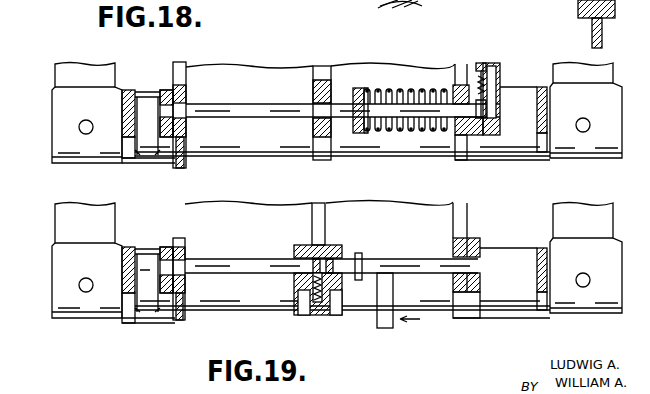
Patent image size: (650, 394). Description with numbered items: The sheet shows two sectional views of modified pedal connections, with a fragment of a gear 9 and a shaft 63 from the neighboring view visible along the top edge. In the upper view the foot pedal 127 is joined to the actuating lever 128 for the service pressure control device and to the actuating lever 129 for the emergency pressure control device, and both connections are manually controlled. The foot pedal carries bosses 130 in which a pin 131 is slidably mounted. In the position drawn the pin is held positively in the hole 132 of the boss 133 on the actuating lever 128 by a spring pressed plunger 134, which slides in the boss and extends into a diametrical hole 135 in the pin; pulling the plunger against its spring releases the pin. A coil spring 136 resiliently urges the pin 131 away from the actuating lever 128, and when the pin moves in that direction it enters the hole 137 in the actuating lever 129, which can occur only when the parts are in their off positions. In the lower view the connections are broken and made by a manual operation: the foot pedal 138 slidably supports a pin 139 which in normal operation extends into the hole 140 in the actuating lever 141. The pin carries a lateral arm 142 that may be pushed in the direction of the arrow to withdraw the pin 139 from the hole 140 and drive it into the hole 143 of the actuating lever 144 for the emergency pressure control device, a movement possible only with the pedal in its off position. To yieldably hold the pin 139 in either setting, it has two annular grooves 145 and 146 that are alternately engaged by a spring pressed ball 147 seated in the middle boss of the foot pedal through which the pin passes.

In FIG. 18, the gear 9 is at (428, 0).
In FIG. 18, the shaft 63 is at (332, 8).
In FIG. 18, the foot pedal 127 is at (262, 72).
In FIG. 18, the actuating lever for the service pressure control device 128 is at (508, 155).
In FIG. 18, the actuating lever for the emergency pressure control device 129 is at (152, 160).
In FIG. 18, the bosses 130 is at (192, 120).
In FIG. 18, the pin 131 is at (286, 106).
In FIG. 18, the hole 132 is at (486, 137).
In FIG. 18, the boss 133 is at (498, 92).
In FIG. 18, the spring pressed plunger 134 is at (491, 106).
In FIG. 18, the diametrical hole 135 is at (462, 140).
In FIG. 18, the coil spring 136 is at (389, 88).
In FIG. 18, the hole 137 is at (162, 112).
In FIG. 19, the foot pedal 138 is at (256, 212).
In FIG. 19, the pin 139 is at (385, 262).
In FIG. 19, the hole 140 is at (483, 278).
In FIG. 19, the actuating lever 141 is at (503, 320).
In FIG. 19, the lateral arm 142 is at (385, 326).
In FIG. 19, the hole 143 is at (160, 268).
In FIG. 19, the actuating lever for the emergency pressure control device 144 is at (149, 305).
In FIG. 19, the annular groove 145 is at (325, 246).
In FIG. 19, the annular groove 146 is at (356, 252).
In FIG. 19, the spring pressed ball 147 is at (300, 276).